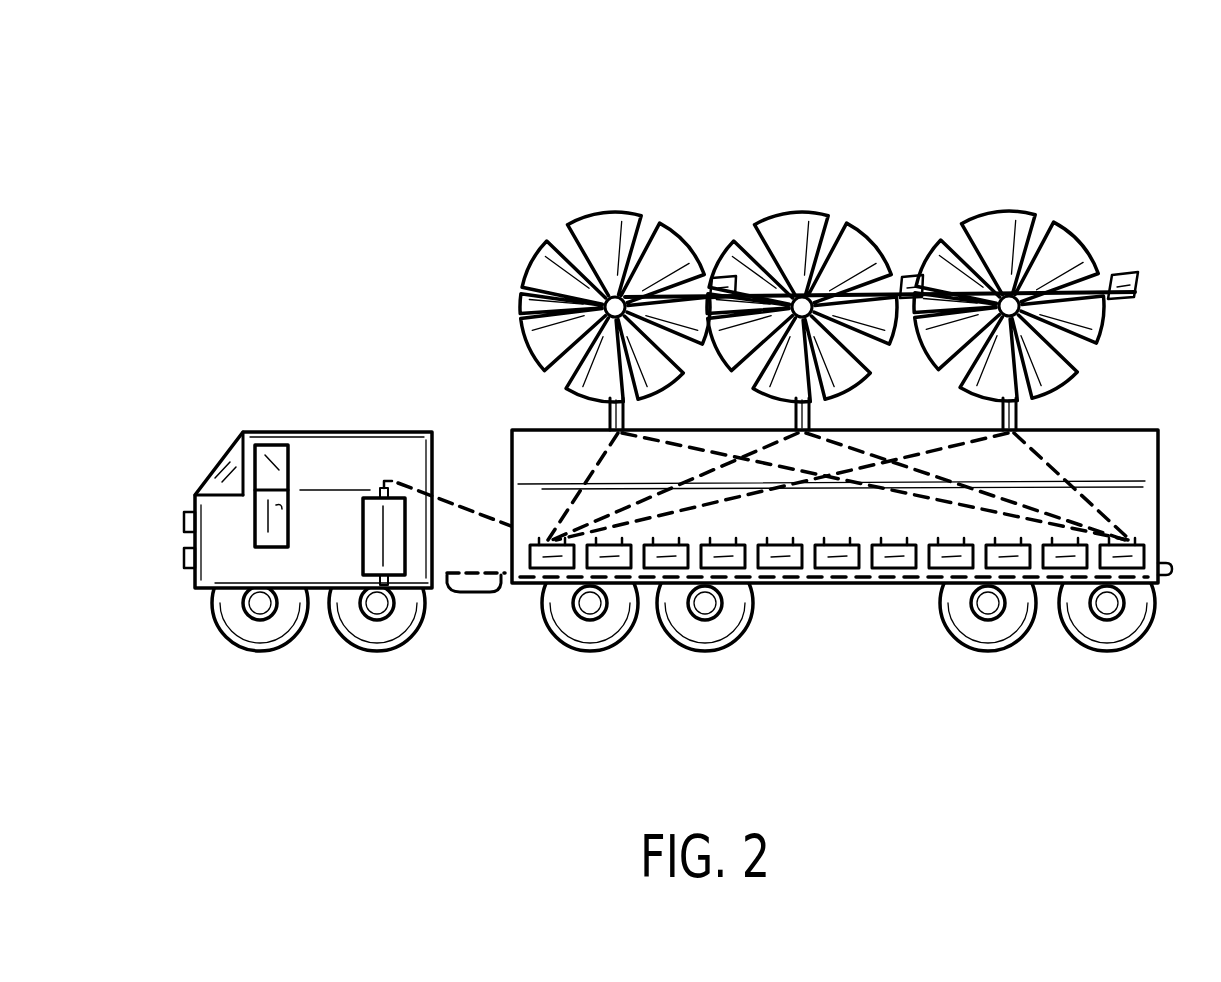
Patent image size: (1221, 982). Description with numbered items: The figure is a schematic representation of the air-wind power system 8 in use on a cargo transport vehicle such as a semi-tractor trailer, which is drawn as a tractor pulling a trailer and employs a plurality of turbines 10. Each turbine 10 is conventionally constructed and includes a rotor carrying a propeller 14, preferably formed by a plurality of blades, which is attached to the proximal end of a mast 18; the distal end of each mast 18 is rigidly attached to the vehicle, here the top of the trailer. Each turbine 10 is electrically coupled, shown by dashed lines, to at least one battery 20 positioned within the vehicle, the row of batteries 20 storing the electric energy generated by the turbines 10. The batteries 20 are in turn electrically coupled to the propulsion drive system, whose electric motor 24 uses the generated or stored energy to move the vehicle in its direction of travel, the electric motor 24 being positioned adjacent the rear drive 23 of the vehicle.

The air-wind power system 8 is at (362, 477).
The turbine 10 is at (904, 96).
The propeller 14 is at (636, 213).
The mast 18 is at (608, 422).
The battery 20 is at (546, 568).
The rear drive 23 is at (395, 607).
The electric motor 24 is at (365, 542).